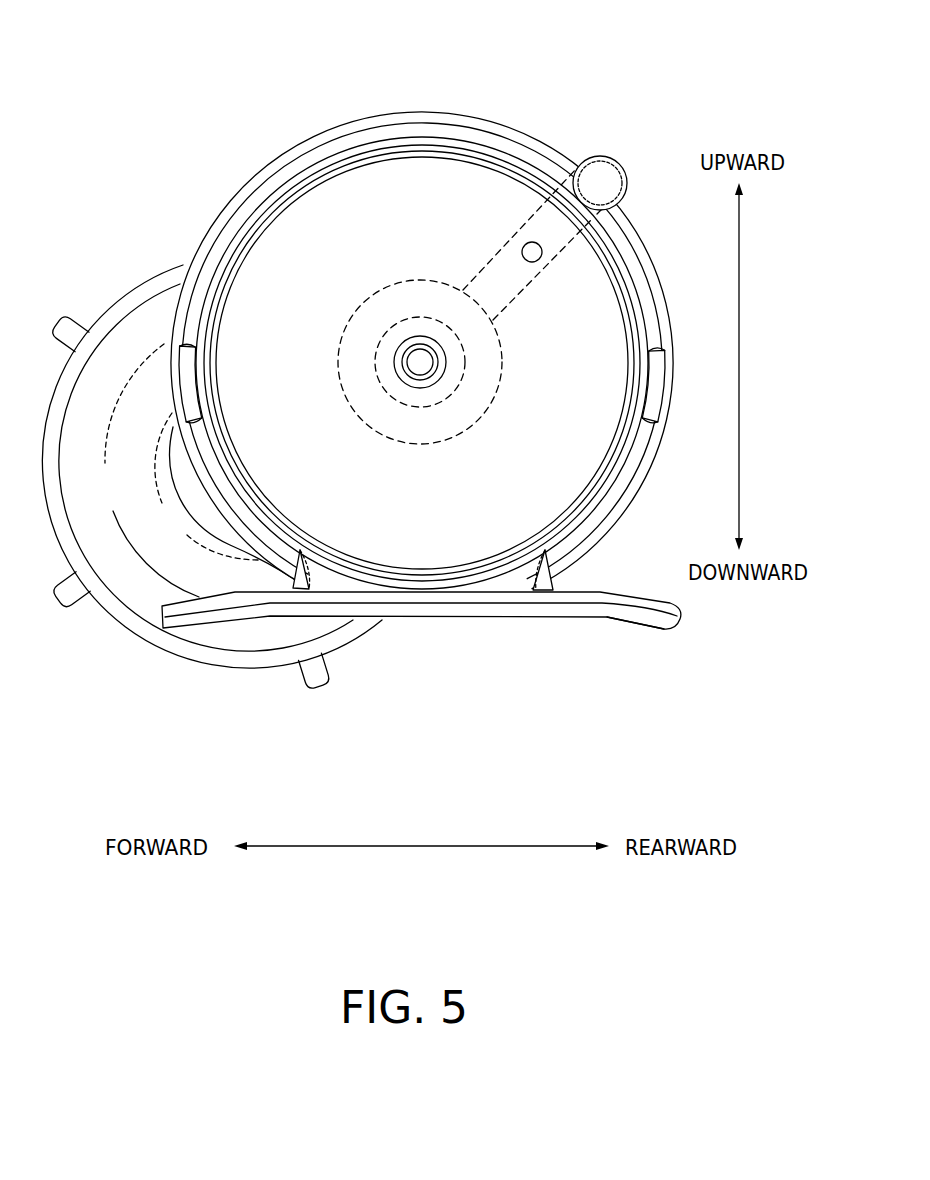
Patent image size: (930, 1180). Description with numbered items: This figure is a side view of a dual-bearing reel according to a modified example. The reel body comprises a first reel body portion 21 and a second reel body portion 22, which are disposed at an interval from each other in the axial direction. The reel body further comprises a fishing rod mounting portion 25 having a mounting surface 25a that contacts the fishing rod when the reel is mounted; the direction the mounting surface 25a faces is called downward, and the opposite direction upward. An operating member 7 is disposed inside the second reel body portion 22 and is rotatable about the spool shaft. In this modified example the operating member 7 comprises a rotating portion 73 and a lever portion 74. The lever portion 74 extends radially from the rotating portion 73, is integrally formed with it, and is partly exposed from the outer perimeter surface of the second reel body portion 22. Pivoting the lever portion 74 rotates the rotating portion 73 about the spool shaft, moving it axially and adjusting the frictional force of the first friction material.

The first reel body portion 21 is at (343, 125).
The second reel body portion 22 is at (395, 140).
The operating member 7 is at (470, 265).
The rotating portion 73 is at (427, 278).
The lever portion 74 is at (600, 156).
The fishing rod mounting portion 25 is at (684, 620).
The mounting surface 25a is at (567, 617).